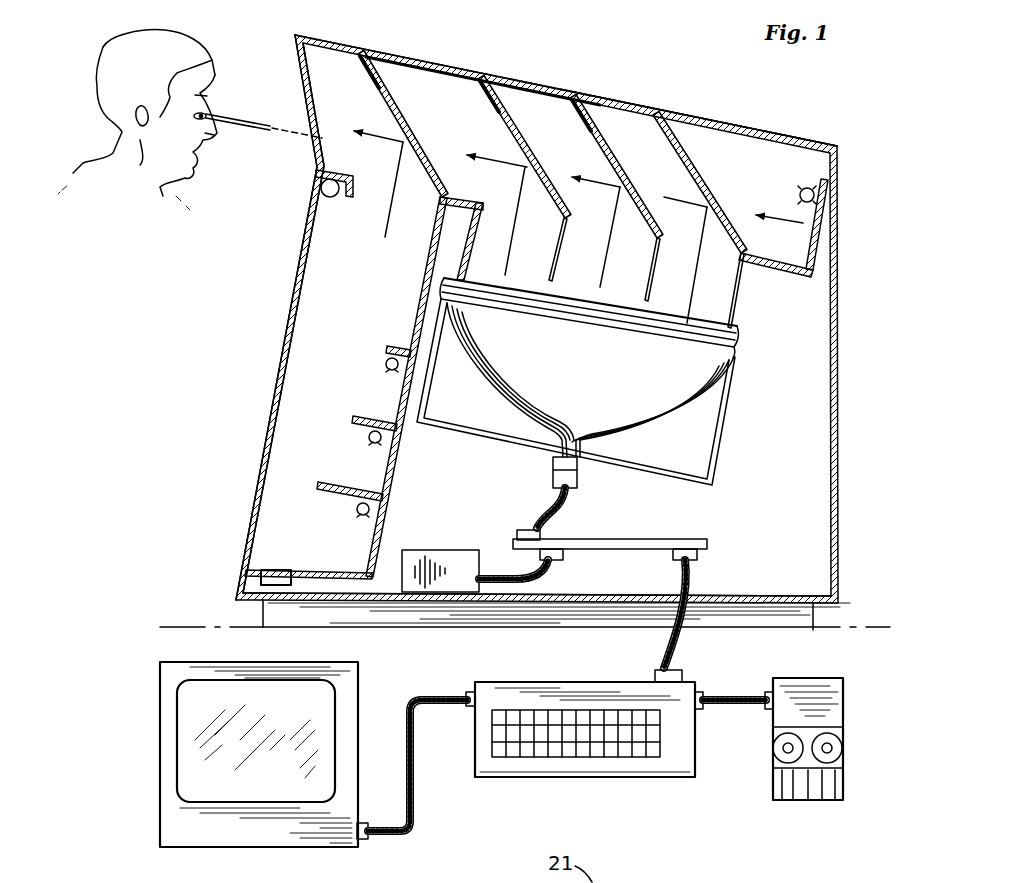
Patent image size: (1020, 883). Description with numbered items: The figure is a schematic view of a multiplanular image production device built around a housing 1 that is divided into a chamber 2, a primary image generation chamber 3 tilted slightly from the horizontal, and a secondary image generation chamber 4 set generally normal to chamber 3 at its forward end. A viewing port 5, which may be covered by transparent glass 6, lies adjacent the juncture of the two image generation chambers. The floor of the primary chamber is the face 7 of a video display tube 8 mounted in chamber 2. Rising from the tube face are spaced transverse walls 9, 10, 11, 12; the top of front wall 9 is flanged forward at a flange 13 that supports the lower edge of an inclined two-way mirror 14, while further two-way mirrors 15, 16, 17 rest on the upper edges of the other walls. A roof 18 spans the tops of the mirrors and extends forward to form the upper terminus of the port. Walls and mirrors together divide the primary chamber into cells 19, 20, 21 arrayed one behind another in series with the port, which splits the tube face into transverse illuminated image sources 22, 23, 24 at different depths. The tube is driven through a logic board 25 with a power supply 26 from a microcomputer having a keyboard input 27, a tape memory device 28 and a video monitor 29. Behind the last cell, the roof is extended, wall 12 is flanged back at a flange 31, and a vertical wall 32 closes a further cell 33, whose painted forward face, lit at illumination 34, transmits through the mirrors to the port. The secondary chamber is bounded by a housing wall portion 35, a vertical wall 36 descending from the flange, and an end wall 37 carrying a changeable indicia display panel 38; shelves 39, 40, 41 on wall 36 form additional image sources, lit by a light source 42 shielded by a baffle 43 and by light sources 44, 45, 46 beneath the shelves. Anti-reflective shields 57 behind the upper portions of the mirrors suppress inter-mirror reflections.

The housing 1 is at (243, 554).
The chamber 2 is at (846, 492).
The primary image generation chamber 3 is at (524, 74).
The secondary image generation chamber 4 is at (286, 325).
The viewing port 5 is at (284, 152).
The transparent glass 6 is at (297, 80).
The face of video display tube 7 is at (580, 290).
The video display tube 8 is at (640, 418).
The front wall 9 is at (478, 233).
The transverse wall 10 is at (555, 245).
The transverse wall 11 is at (653, 264).
The transverse wall 12 is at (737, 310).
The flange 13 is at (446, 205).
The two-way mirror 14 is at (437, 176).
The two-way mirror 15 is at (560, 204).
The two-way mirror 16 is at (648, 217).
The two-way mirror 17 is at (717, 210).
The roof 18 is at (601, 97).
The cell 19 is at (460, 137).
The cell 20 is at (560, 152).
The cell 21 is at (657, 167).
The illuminated image source 22 is at (527, 278).
The illuminated image source 23 is at (620, 300).
The illuminated image source 24 is at (698, 318).
The logic board 25 is at (622, 539).
The power supply 26 is at (441, 550).
The keyboard input 27 is at (623, 778).
The tape memory device 28 is at (845, 722).
The video monitor 29 is at (257, 848).
The flange 31 is at (777, 272).
The vertical wall 32 is at (832, 263).
The further cell 33 is at (752, 175).
The illumination 34 is at (818, 200).
The wall portion 35 is at (276, 380).
The vertical wall 36 is at (393, 468).
The end wall 37 is at (338, 579).
The changeable indicia display panel 38 is at (276, 567).
The shelf 39 is at (397, 346).
The shelf 40 is at (371, 418).
The shelf 41 is at (322, 483).
The light source 42 is at (332, 198).
The baffle 43 is at (336, 174).
The light source 44 is at (384, 363).
The light source 45 is at (367, 438).
The light source 46 is at (360, 512).
The anti-reflective shield 57 is at (384, 73).